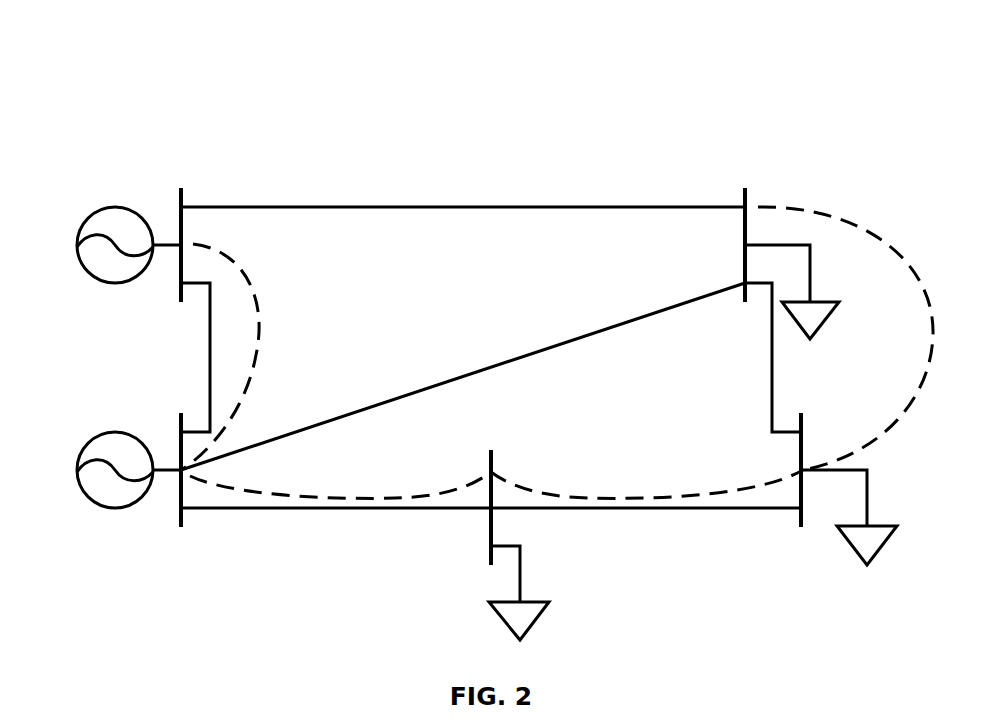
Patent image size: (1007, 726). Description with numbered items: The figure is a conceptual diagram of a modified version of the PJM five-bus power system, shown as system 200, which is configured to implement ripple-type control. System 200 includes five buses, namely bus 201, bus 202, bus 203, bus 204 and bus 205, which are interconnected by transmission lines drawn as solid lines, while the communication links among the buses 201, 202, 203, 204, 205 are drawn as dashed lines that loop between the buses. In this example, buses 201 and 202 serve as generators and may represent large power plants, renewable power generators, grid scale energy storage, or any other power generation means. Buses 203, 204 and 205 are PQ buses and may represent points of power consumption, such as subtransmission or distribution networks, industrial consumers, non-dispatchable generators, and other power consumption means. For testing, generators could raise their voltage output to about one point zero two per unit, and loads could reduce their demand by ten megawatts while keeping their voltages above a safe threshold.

The system 200 is at (120, 60).
The bus 201 is at (162, 432).
The bus 202 is at (473, 533).
The bus 203 is at (783, 452).
The bus 204 is at (727, 255).
The bus 205 is at (162, 208).